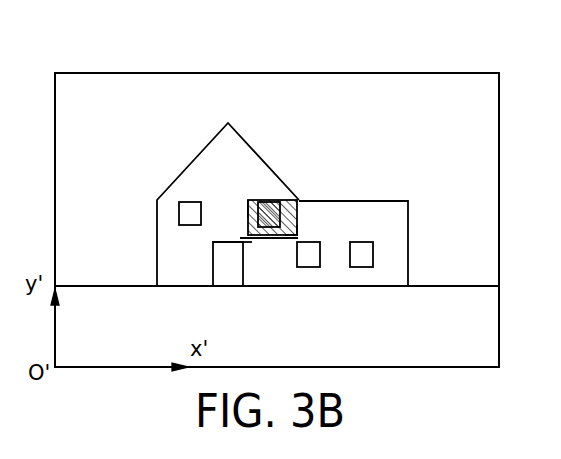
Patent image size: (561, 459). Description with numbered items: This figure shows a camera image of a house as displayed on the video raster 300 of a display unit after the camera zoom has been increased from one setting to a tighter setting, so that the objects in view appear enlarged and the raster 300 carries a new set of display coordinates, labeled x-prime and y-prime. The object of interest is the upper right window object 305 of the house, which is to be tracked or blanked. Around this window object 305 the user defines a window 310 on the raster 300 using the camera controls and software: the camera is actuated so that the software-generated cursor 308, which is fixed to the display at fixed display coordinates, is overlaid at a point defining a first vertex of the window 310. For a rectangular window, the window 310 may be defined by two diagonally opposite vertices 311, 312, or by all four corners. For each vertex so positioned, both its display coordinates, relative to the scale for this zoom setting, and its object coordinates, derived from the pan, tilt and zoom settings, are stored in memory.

The video raster 300 is at (470, 73).
The window object 305 is at (273, 202).
The cursor 308 is at (257, 244).
The window 310 is at (297, 225).
The first vertex 311 is at (248, 199).
The second vertex 312 is at (297, 235).